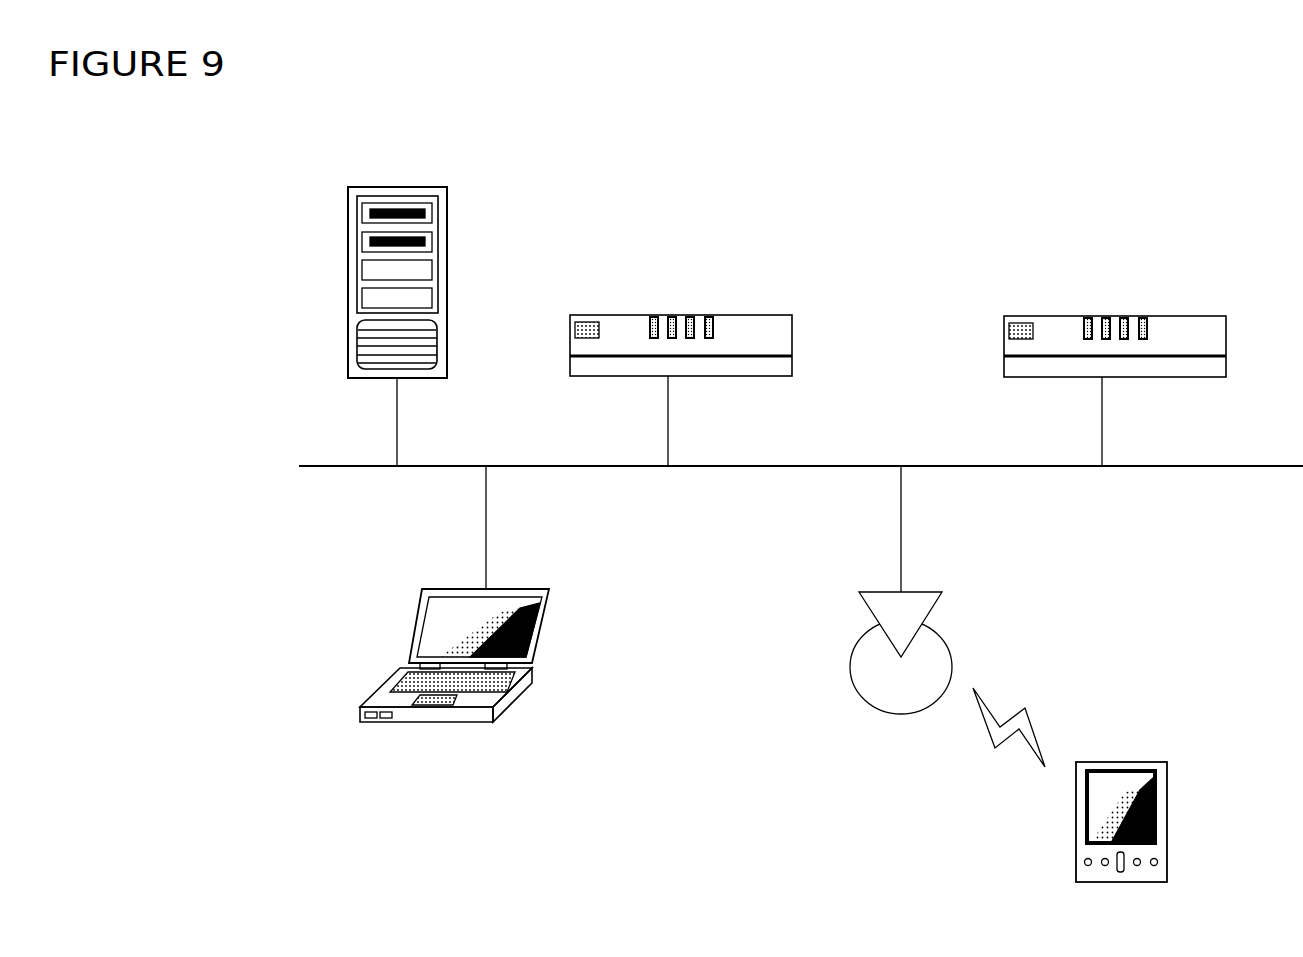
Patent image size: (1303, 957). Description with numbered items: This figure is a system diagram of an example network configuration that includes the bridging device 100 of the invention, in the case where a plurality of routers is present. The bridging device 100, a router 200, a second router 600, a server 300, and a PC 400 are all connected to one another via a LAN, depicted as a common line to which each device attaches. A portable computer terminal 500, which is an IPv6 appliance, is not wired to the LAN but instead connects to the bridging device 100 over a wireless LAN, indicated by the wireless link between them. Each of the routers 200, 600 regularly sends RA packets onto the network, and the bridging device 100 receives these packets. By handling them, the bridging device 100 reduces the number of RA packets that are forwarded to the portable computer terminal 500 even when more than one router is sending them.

The bridging device 100 is at (930, 592).
The router 200 is at (743, 315).
The server 300 is at (425, 187).
The PC 400 is at (537, 588).
The portable computer terminal 500 is at (1132, 762).
The router 600 is at (1178, 315).